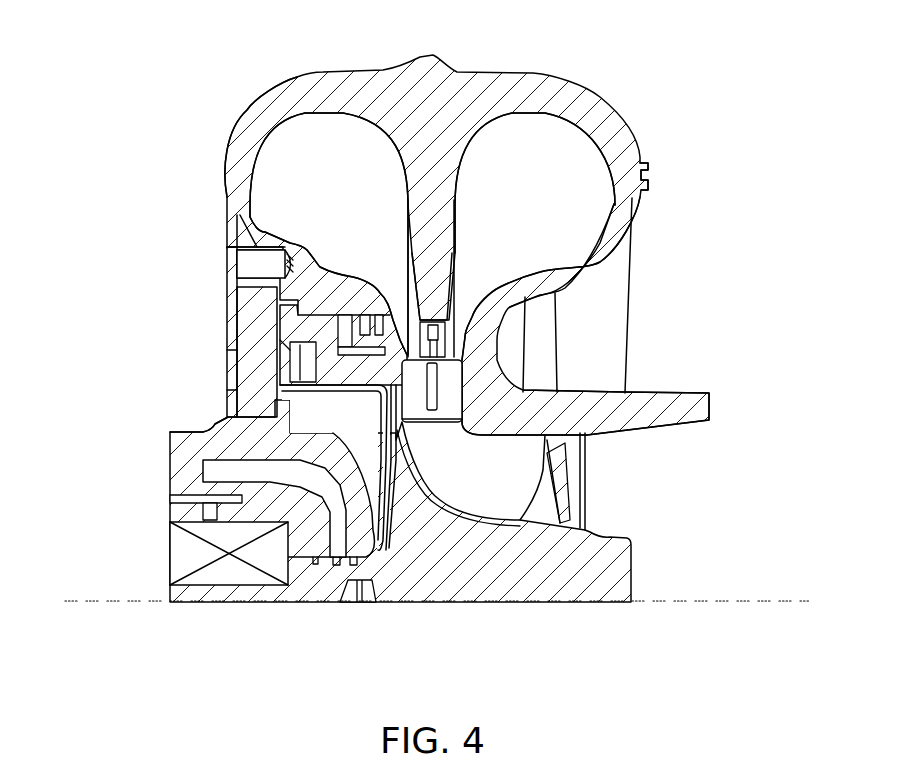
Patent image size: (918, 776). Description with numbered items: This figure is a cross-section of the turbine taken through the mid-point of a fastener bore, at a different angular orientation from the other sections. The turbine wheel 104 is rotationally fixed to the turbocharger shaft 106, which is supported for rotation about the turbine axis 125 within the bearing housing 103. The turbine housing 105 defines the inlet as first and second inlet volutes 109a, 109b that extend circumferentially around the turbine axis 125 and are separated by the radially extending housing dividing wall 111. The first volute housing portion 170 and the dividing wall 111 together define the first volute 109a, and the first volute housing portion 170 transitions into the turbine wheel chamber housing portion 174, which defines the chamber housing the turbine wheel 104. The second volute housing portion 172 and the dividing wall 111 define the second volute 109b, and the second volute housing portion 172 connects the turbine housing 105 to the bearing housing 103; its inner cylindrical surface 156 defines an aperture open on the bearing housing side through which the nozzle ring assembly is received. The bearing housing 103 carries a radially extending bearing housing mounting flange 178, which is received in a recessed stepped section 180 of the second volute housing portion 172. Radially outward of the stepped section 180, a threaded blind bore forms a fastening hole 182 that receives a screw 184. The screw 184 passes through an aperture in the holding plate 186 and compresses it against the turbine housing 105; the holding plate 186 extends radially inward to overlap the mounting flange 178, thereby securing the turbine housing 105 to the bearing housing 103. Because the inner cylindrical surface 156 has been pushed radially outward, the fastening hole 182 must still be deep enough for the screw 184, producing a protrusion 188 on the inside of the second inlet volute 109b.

The bearing housing 103 is at (188, 474).
The turbine wheel 104 is at (457, 547).
The turbine housing 105 is at (415, 112).
The turbocharger shaft 106 is at (265, 592).
The first inlet volute 109a is at (562, 160).
The second inlet volute 109b is at (330, 145).
The housing dividing wall 111 is at (437, 213).
The turbine axis 125 is at (693, 602).
The inner cylindrical surface 156 is at (357, 313).
The first volute housing portion 170 is at (623, 205).
The second volute housing portion 172 is at (260, 123).
The turbine wheel chamber housing portion 174 is at (500, 403).
The bearing housing mounting flange 178 is at (258, 373).
The recessed stepped section 180 is at (243, 280).
The fastening hole 182 is at (228, 210).
The screw 184 is at (225, 248).
The holding plate 186 is at (232, 327).
The protrusion 188 is at (297, 243).